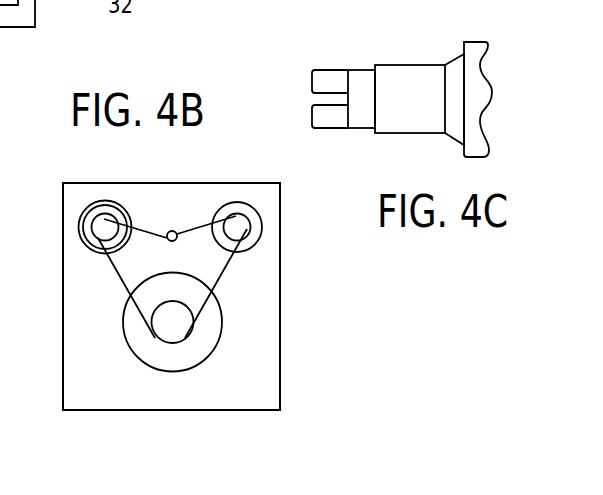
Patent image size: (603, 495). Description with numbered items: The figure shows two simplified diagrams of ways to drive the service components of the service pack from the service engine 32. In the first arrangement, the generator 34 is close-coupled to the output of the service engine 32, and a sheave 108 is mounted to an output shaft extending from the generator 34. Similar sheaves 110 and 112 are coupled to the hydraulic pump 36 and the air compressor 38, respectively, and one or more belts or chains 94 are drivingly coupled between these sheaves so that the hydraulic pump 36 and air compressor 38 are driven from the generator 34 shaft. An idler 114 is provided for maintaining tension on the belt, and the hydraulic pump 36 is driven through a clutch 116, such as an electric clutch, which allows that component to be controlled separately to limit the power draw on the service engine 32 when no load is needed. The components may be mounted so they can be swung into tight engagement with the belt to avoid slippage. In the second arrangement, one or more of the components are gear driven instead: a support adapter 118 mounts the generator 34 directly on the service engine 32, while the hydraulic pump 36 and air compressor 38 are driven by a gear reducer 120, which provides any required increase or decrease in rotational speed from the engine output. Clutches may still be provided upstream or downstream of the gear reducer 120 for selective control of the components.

In FIG. 4B, the service engine 32 is at (280, 370).
In FIG. 4C, the service engine 32 is at (480, 43).
In FIG. 4B, the generator 34 is at (128, 340).
In FIG. 4C, the generator 34 is at (397, 133).
In FIG. 4B, the hydraulic pump 36 is at (82, 220).
In FIG. 4C, the hydraulic pump 36 is at (332, 70).
In FIG. 4B, the air compressor 38 is at (263, 238).
In FIG. 4C, the air compressor 38 is at (325, 128).
In FIG. 4B, the belts or chains 94 is at (115, 272).
In FIG. 4B, the sheave 108 is at (178, 323).
In FIG. 4B, the sheave 110 is at (101, 222).
In FIG. 4B, the sheave 112 is at (238, 225).
In FIG. 4B, the idler 114 is at (174, 231).
In FIG. 4B, the clutch 116 is at (97, 213).
In FIG. 4C, the support adapter 118 is at (457, 62).
In FIG. 4C, the gear reducer 120 is at (358, 70).